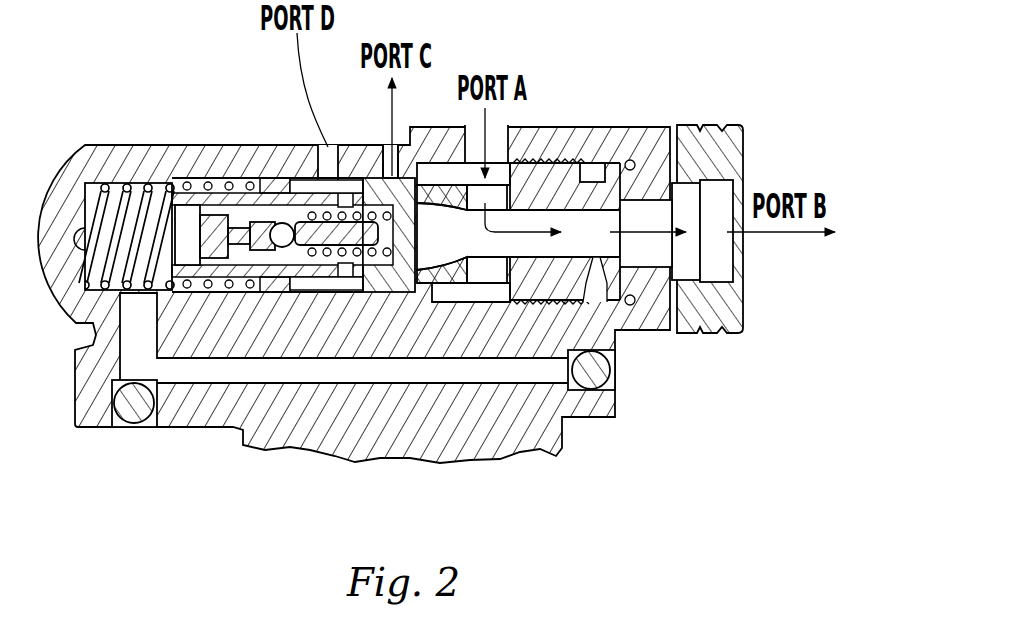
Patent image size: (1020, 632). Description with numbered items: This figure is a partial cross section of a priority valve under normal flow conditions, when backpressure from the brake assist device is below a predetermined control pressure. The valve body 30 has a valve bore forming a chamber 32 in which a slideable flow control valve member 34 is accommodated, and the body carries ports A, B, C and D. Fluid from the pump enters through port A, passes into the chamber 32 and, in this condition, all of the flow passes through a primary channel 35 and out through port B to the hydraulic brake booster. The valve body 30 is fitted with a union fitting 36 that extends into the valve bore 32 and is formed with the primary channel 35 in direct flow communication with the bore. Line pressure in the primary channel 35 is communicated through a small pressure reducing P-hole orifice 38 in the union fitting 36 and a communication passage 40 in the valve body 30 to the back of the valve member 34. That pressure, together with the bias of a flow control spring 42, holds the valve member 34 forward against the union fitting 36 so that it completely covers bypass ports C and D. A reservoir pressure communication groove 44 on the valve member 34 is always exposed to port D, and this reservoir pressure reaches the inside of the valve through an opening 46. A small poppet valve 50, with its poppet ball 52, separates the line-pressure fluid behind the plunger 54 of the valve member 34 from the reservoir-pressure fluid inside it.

The valve body 30 is at (230, 147).
The chamber 32 is at (233, 177).
The flow control valve member 34 is at (380, 302).
The primary channel 35 is at (543, 217).
The union fitting 36 is at (731, 127).
The P-hole orifice 38 is at (600, 252).
The communication passage 40 is at (460, 380).
The flow control spring 42 is at (127, 183).
The reservoir pressure communication groove 44 is at (300, 178).
The opening 46 is at (360, 146).
The poppet valve 50 is at (330, 255).
The poppet ball 52 is at (236, 428).
The plunger 54 is at (413, 292).